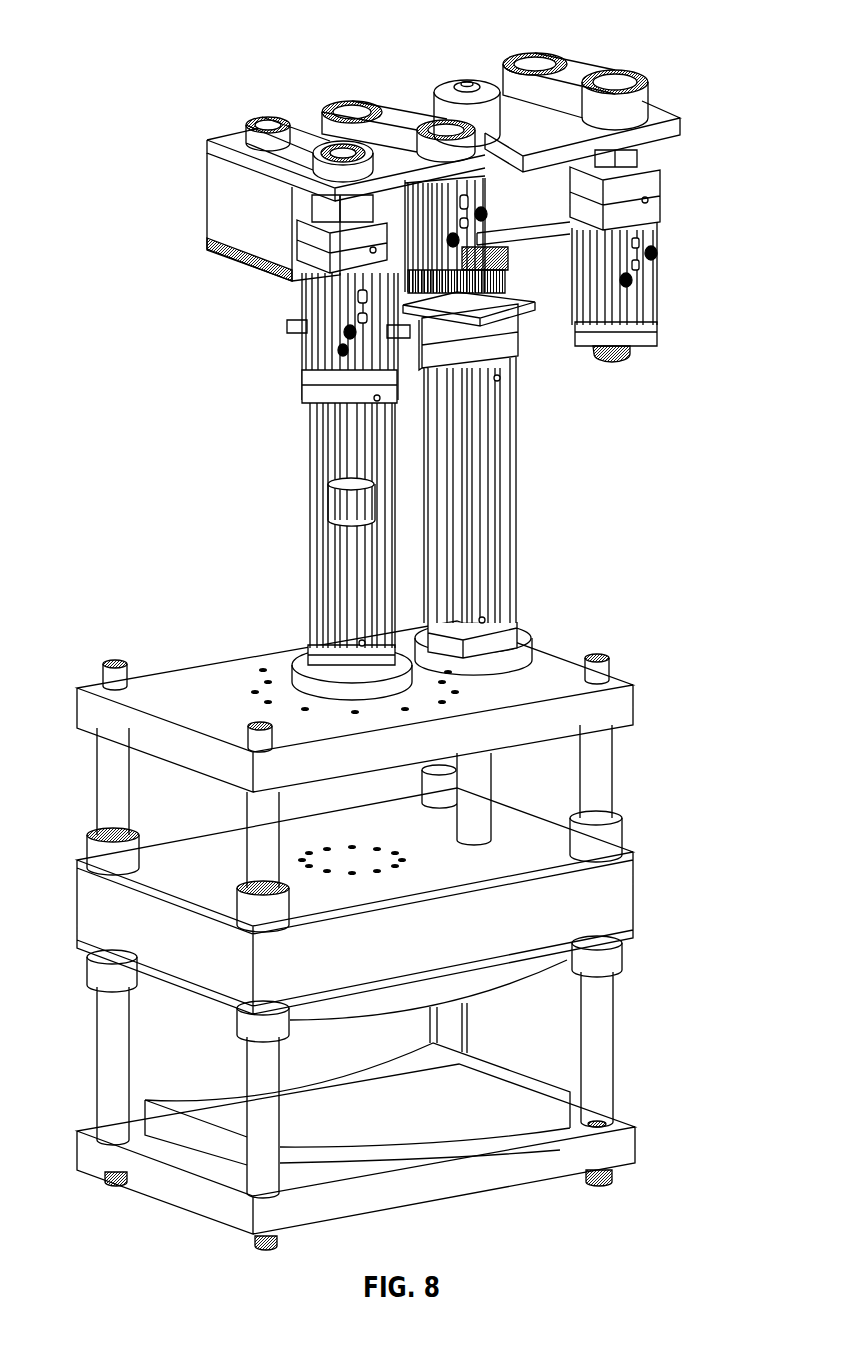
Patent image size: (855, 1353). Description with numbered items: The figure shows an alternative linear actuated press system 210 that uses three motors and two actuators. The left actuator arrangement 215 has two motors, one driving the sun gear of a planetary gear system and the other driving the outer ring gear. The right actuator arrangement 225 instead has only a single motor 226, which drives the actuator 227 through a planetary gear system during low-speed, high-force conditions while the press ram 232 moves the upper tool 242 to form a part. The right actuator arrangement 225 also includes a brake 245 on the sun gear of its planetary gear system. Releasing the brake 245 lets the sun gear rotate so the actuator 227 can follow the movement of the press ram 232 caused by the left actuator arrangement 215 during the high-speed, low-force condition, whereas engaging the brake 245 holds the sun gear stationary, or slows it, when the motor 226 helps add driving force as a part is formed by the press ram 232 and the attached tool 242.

The linear actuated press system 210 is at (130, 31).
The left actuator arrangement 215 is at (264, 309).
The right actuator arrangement 225 is at (670, 256).
The single motor 226 is at (650, 243).
The actuator 227 is at (497, 522).
The press ram 232 is at (618, 912).
The upper tool 242 is at (530, 972).
The brake 245 is at (466, 84).